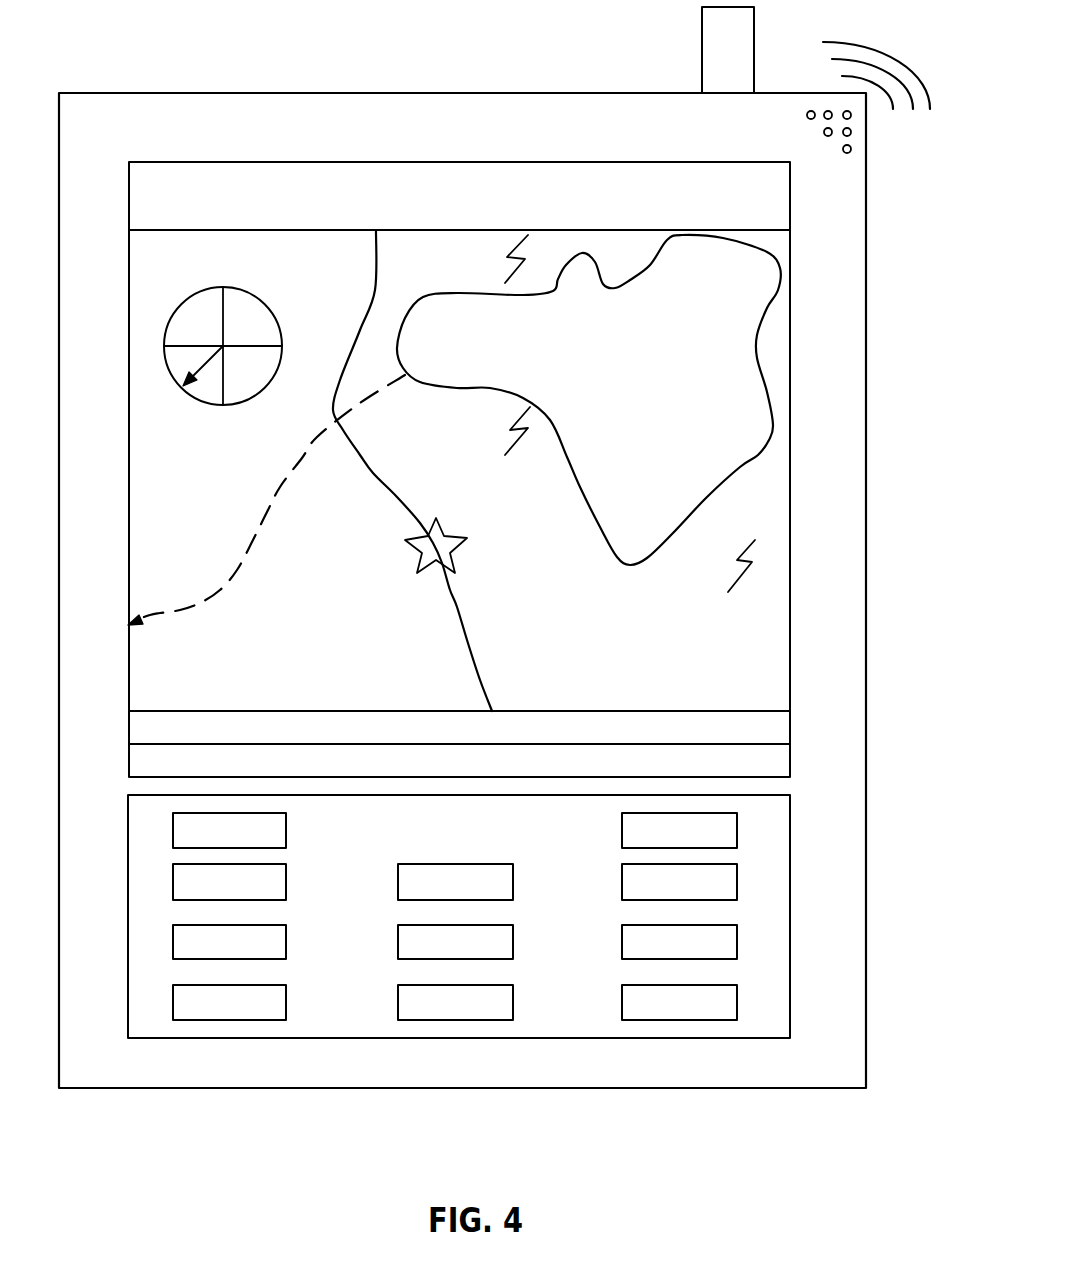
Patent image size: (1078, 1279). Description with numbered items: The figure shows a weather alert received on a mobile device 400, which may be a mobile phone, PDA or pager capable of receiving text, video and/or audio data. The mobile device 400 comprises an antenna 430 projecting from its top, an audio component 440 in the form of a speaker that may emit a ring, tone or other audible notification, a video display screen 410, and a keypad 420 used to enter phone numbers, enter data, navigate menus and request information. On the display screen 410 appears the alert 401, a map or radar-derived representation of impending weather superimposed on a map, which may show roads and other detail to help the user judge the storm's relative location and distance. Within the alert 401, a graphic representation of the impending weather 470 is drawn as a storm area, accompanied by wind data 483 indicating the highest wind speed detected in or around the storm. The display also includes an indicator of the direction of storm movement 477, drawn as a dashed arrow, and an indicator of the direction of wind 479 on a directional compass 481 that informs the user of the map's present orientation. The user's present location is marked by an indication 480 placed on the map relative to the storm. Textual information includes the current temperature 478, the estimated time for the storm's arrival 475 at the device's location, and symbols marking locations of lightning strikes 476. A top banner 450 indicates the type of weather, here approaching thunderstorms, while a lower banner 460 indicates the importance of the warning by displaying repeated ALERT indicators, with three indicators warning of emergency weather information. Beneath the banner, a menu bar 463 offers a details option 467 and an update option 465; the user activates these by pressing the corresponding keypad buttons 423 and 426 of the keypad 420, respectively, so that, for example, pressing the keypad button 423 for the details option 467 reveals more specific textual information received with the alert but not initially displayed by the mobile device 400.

The mobile device 400 is at (877, 1105).
The alert 401 is at (790, 633).
The video display screen 410 is at (753, 507).
The keypad 420 is at (490, 916).
The keypad button 423 is at (243, 842).
The keypad button 426 is at (703, 841).
The antenna 430 is at (720, 75).
The audio component 440 is at (824, 135).
The top banner 450 is at (190, 195).
The lower banner 460 is at (720, 727).
The menu bar 463 is at (459, 775).
The update option 465 is at (718, 762).
The details option 467 is at (180, 762).
The impending weather 470 is at (670, 471).
The estimated time for the storm's arrival 475 is at (355, 677).
The lightning strikes 476 is at (510, 258).
The direction of storm movement 477 is at (267, 510).
The current temperature 478 is at (615, 662).
The direction of wind 479 is at (187, 386).
The indication of the user's present location 480 is at (427, 553).
The directional compass 481 is at (267, 302).
The wind data 483 is at (598, 335).